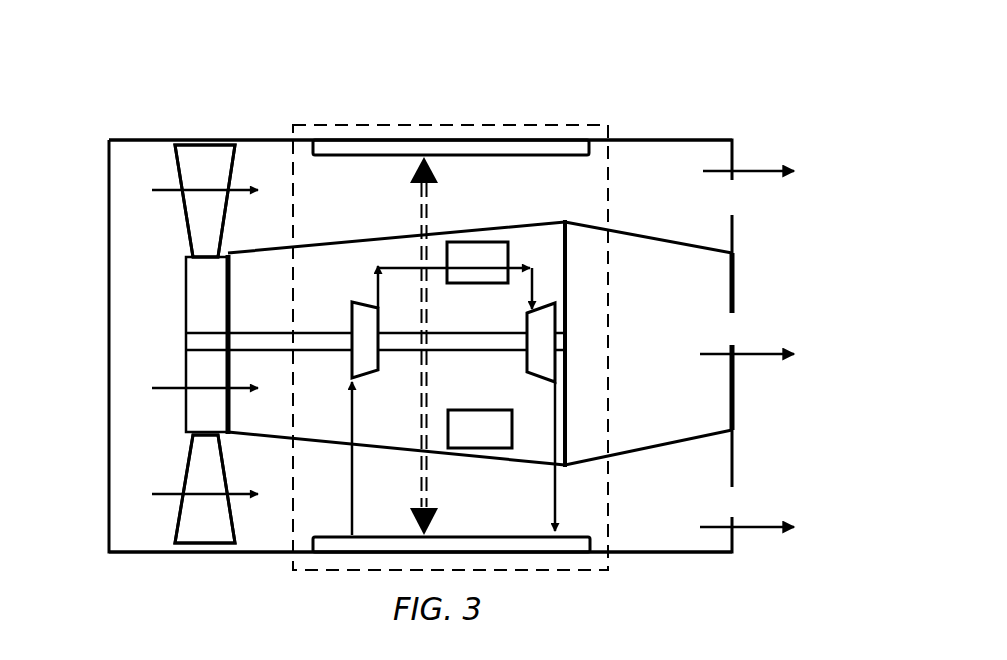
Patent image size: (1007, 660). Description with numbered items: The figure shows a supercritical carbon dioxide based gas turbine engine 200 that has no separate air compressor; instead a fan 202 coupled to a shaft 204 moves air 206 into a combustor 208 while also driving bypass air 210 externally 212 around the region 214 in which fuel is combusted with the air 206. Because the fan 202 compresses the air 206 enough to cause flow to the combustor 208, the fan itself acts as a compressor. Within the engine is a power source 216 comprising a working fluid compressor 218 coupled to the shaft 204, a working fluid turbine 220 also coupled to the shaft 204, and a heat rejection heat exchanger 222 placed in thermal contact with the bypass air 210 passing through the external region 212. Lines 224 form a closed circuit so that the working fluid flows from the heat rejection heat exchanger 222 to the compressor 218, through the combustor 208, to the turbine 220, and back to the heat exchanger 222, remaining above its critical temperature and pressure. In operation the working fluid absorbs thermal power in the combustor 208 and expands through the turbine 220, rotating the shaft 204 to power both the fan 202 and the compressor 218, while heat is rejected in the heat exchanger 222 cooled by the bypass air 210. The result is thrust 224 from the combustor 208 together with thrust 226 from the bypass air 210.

The gas turbine engine 200 is at (712, 94).
The fan 202 is at (183, 205).
The shaft 204 is at (267, 333).
The air 206 is at (167, 388).
The combustor 208 is at (487, 449).
The bypass air 210 is at (160, 190).
The external region 212 is at (339, 505).
The region 214 is at (339, 425).
The power source 216 is at (588, 122).
The working fluid compressor 218 is at (352, 302).
The working fluid turbine 220 is at (525, 362).
The heat rejection heat exchanger 222 is at (363, 138).
The lines 224 is at (437, 270).
The thrust 226 is at (770, 165).